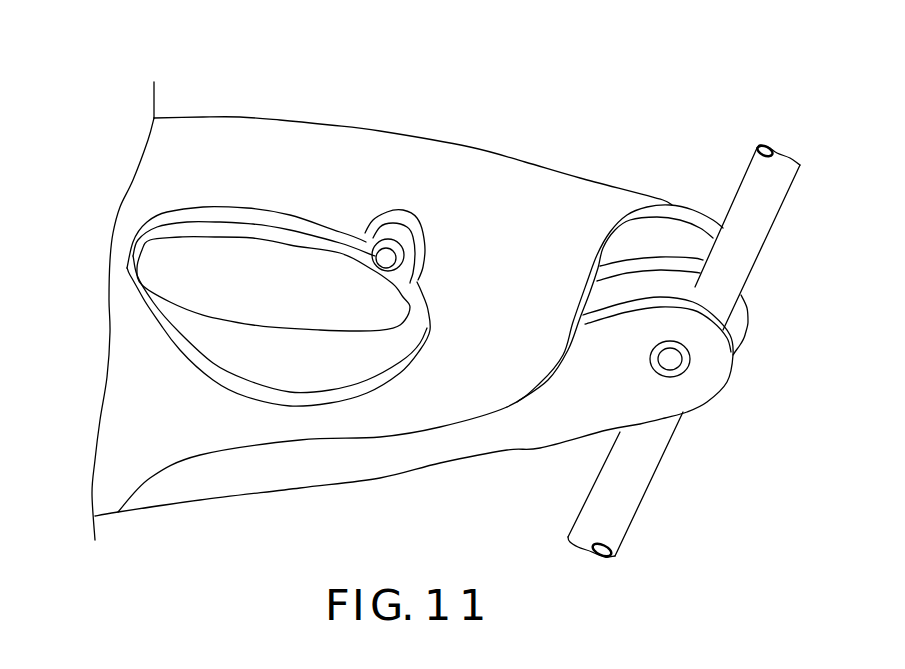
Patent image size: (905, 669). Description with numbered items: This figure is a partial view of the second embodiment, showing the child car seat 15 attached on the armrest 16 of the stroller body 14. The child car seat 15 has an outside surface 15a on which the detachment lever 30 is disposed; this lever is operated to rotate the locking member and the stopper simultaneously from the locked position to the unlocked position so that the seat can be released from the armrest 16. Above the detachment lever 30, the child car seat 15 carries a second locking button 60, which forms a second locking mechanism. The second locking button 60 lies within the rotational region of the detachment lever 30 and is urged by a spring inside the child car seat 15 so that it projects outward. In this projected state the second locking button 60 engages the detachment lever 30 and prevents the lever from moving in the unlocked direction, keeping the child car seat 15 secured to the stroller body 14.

The child car seat 15 is at (491, 143).
The upper surface of housing 15a is at (553, 188).
The detachment lever 30 is at (223, 296).
The second locking button 60 is at (393, 258).
The armrest 16 is at (505, 440).
The stroller body 14 is at (668, 517).